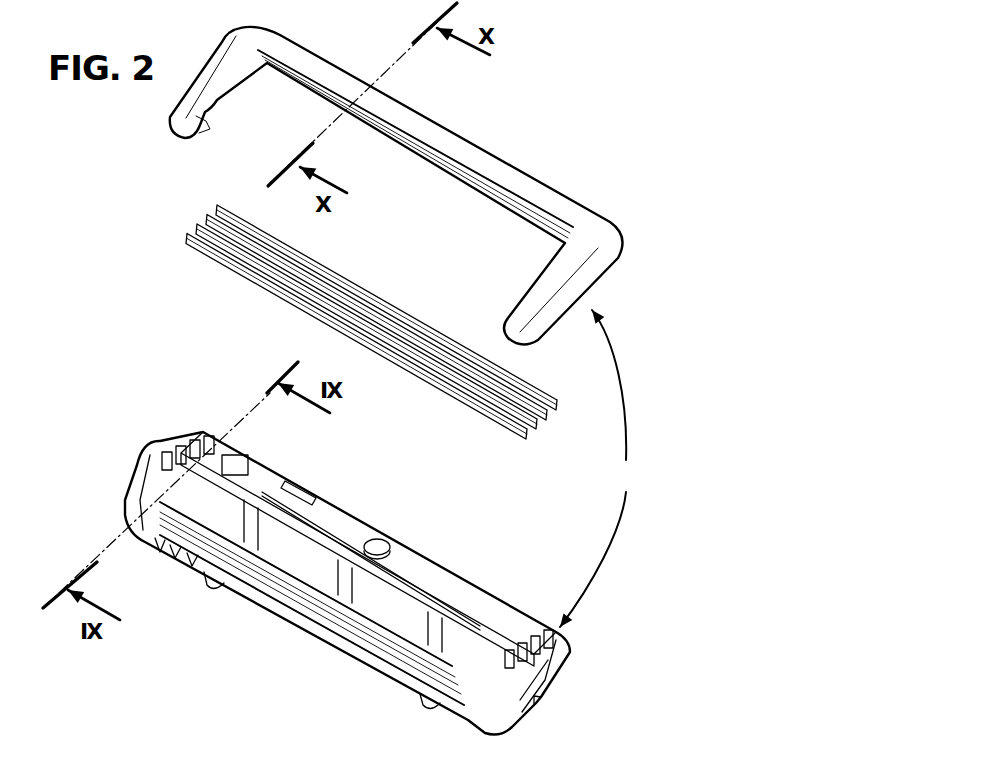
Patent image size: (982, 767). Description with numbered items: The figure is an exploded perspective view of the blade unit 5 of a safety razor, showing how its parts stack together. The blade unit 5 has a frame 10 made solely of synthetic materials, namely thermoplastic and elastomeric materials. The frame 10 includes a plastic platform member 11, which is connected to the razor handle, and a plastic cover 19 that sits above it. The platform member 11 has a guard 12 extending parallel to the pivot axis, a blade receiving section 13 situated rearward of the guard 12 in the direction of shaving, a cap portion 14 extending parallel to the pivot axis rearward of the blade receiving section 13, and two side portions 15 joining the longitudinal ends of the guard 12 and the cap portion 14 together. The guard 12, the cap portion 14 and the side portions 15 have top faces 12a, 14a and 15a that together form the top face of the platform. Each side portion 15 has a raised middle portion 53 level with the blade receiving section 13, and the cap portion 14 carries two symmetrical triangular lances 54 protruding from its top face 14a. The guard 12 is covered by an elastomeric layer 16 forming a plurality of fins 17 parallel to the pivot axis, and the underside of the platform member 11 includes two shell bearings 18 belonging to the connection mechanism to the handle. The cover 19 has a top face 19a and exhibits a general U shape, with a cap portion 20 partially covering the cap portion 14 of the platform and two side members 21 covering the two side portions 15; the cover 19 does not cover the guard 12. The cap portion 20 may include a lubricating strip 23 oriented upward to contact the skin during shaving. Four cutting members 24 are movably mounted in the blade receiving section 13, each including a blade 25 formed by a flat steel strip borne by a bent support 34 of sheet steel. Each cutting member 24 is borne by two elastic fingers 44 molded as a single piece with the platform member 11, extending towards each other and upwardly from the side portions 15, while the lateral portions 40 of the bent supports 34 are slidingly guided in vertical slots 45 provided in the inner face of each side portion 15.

The blade unit 5 is at (498, 91).
The frame 10 is at (599, 468).
The platform member 11 is at (128, 496).
The guard 12 is at (307, 634).
The top face of the guard 12a is at (364, 631).
The blade receiving section 13 is at (323, 533).
The cap portion 14 is at (363, 510).
The top face of the cap portion 14a is at (415, 557).
The side portions 15 is at (534, 674).
The top face of the side portions 15a is at (150, 471).
The elastomeric layer 16 is at (248, 580).
The fins 17 is at (187, 547).
The shell bearings 18 is at (212, 585).
The cover 19 is at (630, 238).
The top face of the cover 19a is at (543, 197).
The cap portion of the cover 20 is at (500, 155).
The side members of the cover 21 is at (232, 66).
The lubricating strip 23 is at (351, 83).
The cutting member 24 is at (217, 207).
The blade 25 is at (387, 297).
The bent support 34 is at (570, 418).
The lateral portions 40 is at (347, 336).
The elastic fingers 44 is at (242, 525).
The vertical slots 45 is at (190, 442).
The raised middle portion 53 is at (535, 701).
The triangular lances 54 is at (237, 470).